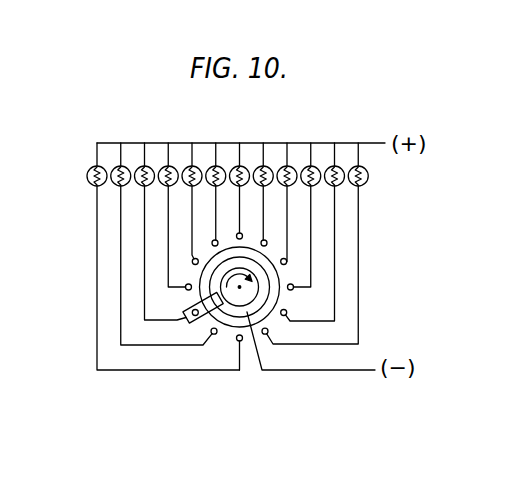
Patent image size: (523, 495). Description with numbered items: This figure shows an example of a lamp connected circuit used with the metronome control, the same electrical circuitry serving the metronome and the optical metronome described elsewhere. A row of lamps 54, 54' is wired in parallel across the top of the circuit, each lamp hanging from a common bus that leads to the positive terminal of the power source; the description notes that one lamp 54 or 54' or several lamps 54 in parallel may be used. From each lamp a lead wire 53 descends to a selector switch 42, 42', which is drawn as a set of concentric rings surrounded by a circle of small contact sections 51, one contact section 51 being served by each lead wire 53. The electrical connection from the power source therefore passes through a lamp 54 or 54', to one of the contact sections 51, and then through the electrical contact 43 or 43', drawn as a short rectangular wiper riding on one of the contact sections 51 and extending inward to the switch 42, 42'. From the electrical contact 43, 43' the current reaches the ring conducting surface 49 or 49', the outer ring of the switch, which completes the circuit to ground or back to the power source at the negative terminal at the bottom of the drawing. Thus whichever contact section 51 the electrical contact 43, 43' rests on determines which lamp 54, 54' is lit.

The rotary selector switch 42 is at (212, 336).
The rotary selector switch (alternate) 42' is at (212, 336).
The electrical contact 43 is at (142, 354).
The electrical contact 43' is at (142, 354).
The ring conducting surface 49 is at (270, 330).
The ring conducting surface 49' is at (270, 330).
The contact sections 51 is at (293, 289).
The lamp lead wires 53 is at (311, 227).
The lamp 54 is at (221, 143).
The lamp 54' is at (221, 143).